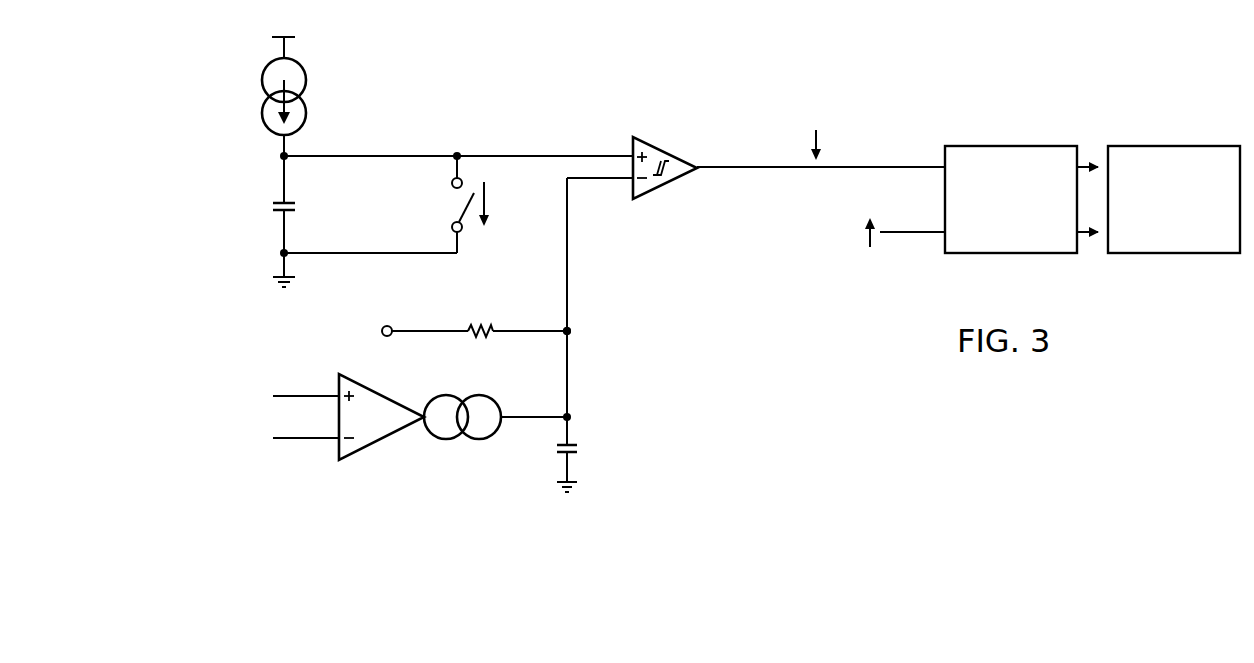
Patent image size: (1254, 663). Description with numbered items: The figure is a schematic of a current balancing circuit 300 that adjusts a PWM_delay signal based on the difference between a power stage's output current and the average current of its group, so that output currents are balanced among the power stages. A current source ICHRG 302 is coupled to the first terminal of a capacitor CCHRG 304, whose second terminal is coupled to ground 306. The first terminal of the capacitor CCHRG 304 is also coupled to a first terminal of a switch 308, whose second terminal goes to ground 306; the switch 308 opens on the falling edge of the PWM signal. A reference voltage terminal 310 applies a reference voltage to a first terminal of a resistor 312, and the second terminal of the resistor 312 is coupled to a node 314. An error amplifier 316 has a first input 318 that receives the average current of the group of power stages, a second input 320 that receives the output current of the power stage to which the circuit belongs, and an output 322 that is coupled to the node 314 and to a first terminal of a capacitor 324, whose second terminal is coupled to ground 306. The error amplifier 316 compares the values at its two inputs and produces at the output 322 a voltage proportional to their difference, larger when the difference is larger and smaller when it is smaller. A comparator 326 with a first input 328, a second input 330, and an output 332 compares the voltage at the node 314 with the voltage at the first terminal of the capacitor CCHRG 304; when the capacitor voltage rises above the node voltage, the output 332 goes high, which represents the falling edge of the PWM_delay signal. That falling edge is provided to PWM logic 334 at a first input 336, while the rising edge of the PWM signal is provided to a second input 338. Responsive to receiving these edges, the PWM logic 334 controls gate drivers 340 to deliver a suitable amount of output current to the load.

The current balancing circuit 300 is at (870, 80).
The current source ICHRG 302 is at (263, 80).
The capacitor CCHRG 304 is at (272, 205).
The ground 306 is at (273, 280).
The switch 308 is at (468, 208).
The reference voltage terminal 310 is at (415, 328).
The resistor 312 is at (483, 326).
The node 314 is at (563, 328).
The error amplifier 316 is at (385, 440).
The first input 318 is at (307, 393).
The second input 320 is at (307, 442).
The output 322 is at (507, 412).
The capacitor 324 is at (578, 450).
The comparator 326 is at (667, 185).
The first input 328 is at (625, 148).
The second input 330 is at (623, 187).
The output 332 is at (703, 160).
The PWM logic 334 is at (1010, 145).
The first input 336 is at (938, 160).
The second input 338 is at (938, 240).
The gate drivers 340 is at (1173, 145).